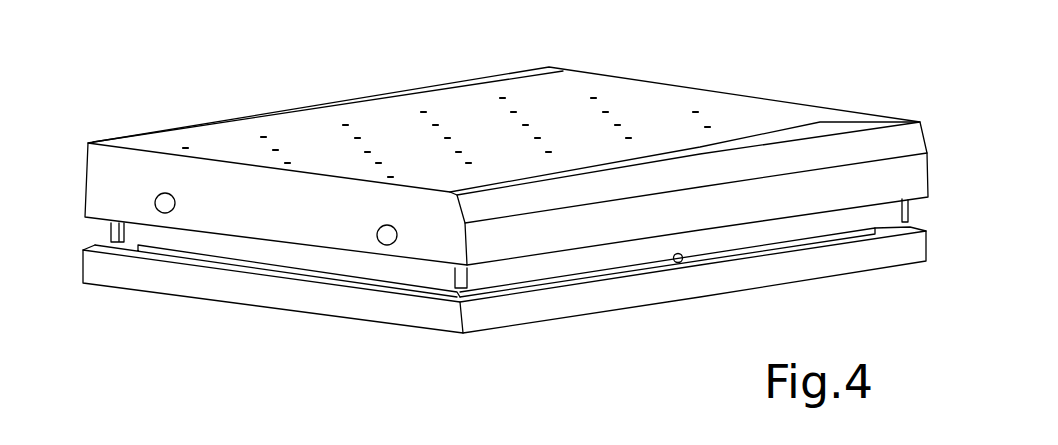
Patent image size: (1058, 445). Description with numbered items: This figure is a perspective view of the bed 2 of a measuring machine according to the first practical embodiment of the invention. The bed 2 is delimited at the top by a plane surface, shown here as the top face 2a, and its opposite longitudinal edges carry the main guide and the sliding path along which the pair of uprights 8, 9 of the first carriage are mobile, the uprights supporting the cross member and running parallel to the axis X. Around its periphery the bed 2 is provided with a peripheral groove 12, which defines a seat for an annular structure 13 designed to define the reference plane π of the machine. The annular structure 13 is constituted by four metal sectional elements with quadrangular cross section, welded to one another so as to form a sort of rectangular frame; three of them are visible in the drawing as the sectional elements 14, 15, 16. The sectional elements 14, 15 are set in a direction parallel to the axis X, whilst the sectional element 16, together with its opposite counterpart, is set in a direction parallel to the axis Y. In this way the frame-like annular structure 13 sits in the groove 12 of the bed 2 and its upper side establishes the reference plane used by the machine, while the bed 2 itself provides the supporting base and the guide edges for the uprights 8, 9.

The bed 2 is at (801, 104).
The top surface with holes 2a is at (390, 130).
The upright 8 is at (857, 148).
The upright 9 is at (258, 117).
The peripheral groove 12 is at (907, 223).
The annular structure 13 is at (837, 232).
The metal sectional element 14 is at (525, 280).
The metal sectional element 15 is at (110, 229).
The metal sectional element 16 is at (341, 262).